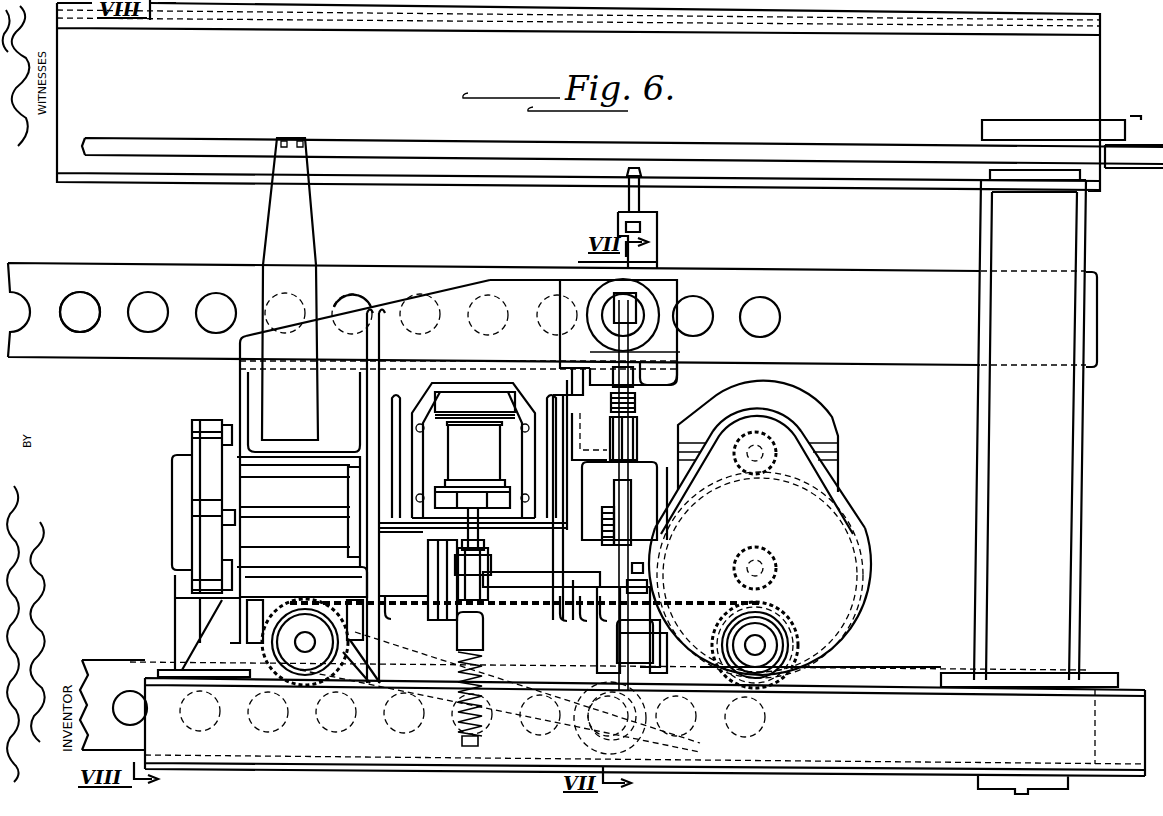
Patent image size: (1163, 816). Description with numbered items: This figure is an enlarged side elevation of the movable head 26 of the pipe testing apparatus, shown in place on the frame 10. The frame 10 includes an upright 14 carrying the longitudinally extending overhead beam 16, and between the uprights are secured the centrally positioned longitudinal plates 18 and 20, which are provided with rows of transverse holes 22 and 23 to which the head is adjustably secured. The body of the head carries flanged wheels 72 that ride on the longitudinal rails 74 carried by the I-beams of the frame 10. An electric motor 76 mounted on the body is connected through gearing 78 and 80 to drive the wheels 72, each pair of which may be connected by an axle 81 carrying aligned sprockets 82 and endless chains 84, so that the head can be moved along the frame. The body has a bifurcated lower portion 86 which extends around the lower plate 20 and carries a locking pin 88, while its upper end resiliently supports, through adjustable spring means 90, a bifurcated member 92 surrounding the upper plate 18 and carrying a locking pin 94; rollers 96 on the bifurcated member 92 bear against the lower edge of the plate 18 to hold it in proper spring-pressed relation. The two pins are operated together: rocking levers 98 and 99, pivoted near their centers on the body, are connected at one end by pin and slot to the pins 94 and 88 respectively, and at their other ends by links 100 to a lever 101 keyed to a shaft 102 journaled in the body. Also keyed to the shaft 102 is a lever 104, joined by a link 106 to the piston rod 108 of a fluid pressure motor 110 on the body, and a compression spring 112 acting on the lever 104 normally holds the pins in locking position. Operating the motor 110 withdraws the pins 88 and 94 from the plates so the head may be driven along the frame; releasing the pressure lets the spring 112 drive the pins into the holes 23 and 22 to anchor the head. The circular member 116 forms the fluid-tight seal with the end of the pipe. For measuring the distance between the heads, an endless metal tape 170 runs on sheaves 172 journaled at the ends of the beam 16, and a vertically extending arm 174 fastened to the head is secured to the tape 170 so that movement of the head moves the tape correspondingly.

The frame 10 is at (145, 742).
The upright 14 is at (1086, 408).
The overhead beam 16 is at (1100, 74).
The plate 18 is at (80, 265).
The plate 20 is at (93, 660).
The transverse holes 22 is at (131, 300).
The transverse holes 23 is at (132, 698).
The movable head 26 is at (505, 253).
The flanged wheels 72 is at (286, 620).
The rails 74 is at (168, 670).
The electric motor 76 is at (824, 424).
The gearing 78 is at (755, 475).
The gearing 80 is at (780, 584).
The axles 81 is at (792, 610).
The sprockets 82 is at (674, 592).
The endless chains 84 is at (670, 582).
The bifurcated lower portion 86 is at (690, 735).
The locking pin 88 is at (650, 735).
The adjustable spring means 90 is at (637, 408).
The bifurcated member 92 is at (637, 292).
The locking pin 94 is at (640, 303).
The rollers 96 is at (660, 380).
The rocking lever 98 is at (660, 352).
The rocking lever 99 is at (598, 552).
The links 100 is at (614, 488).
The lever 101 is at (610, 504).
The shaft 102 is at (575, 613).
The lever 104 is at (427, 578).
The link 106 is at (486, 605).
The piston rod 108 is at (482, 547).
The fluid pressure motor 110 is at (485, 453).
The compression spring 112 is at (486, 644).
The circular member 116 is at (186, 455).
The endless metal tape 170 is at (818, 150).
The sheaves 172 is at (1152, 145).
The vertically extending arm 174 is at (305, 232).